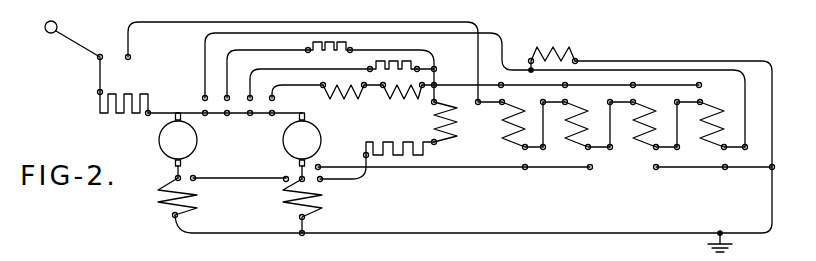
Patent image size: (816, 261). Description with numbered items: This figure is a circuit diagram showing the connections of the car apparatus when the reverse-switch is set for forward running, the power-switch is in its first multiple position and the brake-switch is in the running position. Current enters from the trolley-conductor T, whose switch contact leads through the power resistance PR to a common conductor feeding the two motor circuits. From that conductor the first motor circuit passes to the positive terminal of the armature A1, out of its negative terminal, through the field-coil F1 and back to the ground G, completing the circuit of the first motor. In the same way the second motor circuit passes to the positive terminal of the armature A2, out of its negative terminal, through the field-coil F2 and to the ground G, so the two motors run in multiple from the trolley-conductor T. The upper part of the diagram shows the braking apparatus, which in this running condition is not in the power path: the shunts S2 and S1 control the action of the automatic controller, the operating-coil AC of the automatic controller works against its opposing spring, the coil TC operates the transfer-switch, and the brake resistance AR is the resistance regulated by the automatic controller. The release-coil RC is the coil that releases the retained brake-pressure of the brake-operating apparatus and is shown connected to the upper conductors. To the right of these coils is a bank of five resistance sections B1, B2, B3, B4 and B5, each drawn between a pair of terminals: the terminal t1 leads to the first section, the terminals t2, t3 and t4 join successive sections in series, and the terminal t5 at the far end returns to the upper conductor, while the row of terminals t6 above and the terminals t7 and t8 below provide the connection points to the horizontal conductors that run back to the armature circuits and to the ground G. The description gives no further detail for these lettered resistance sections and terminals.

The trolley-conductor T is at (74, 58).
The power resistance PR is at (125, 114).
The shunt S2 is at (335, 41).
The shunt S1 is at (414, 67).
The release-coil RC is at (553, 49).
The operating-coil of automatic controller AC is at (344, 104).
The coil operating transfer-switch TC is at (403, 104).
The brake resistance AR is at (397, 141).
The armature of motor M' A1 is at (178, 147).
The armature of motor M2 A2 is at (302, 147).
The field-coil of motor M' F1 is at (169, 214).
The field-coil of motor M2 F2 is at (296, 212).
The resistor B1 is at (458, 122).
The resistor B2 is at (514, 133).
The resistor B3 is at (580, 133).
The resistor B4 is at (648, 133).
The resistor B5 is at (715, 133).
The terminal t1 is at (485, 97).
The terminal t2 is at (550, 125).
The terminal t3 is at (617, 125).
The terminal t4 is at (684, 125).
The terminal t5 is at (743, 149).
The terminal t6 is at (606, 80).
The terminal t7 is at (454, 176).
The terminal t8 is at (710, 176).
The ground G is at (732, 243).